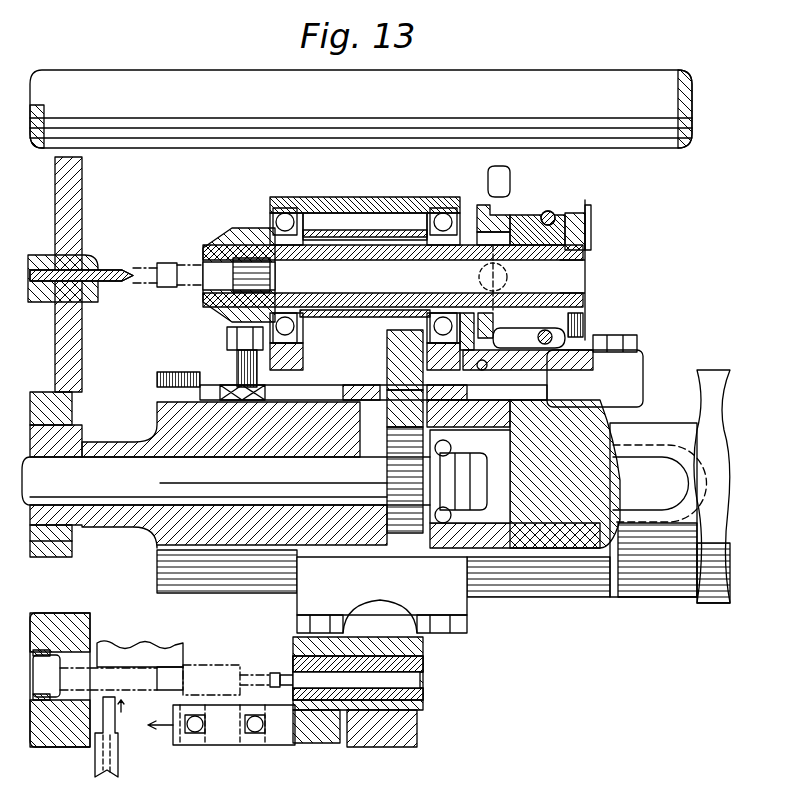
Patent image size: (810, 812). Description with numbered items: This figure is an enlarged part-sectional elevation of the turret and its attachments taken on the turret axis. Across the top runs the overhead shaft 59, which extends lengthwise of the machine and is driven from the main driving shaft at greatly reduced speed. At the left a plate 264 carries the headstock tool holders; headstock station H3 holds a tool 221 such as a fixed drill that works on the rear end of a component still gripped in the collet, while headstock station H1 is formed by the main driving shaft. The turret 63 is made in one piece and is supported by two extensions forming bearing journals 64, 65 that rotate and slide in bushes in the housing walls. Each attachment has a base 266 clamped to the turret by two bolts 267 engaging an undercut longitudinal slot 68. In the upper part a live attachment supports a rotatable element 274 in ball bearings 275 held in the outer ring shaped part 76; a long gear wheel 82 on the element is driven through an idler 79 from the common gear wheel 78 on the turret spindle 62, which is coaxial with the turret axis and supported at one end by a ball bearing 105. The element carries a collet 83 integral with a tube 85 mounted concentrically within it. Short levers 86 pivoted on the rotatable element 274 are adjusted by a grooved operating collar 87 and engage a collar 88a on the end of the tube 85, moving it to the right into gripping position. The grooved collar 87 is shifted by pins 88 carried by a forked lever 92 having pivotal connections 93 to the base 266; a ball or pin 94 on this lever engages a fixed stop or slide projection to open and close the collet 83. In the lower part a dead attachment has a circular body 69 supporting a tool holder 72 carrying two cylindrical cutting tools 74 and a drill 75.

The overhead shaft 59 is at (100, 78).
The plate 264 is at (80, 191).
The headstock station H3 is at (98, 252).
The collet 83 is at (226, 246).
The tool 221 is at (110, 284).
The rotatable element 274 is at (398, 247).
The outer ring shaped part 76 is at (347, 206).
The long gear wheel 82 is at (377, 226).
The ball bearings 275 is at (286, 209).
The ball or pin 94 is at (509, 180).
The forked lever 92 is at (508, 212).
The grooved operating collar 87 is at (549, 214).
The short levers 86 is at (572, 215).
The collar 88a is at (591, 224).
The tube 85 is at (585, 262).
The pins 88 is at (505, 277).
The pivotal connections 93 is at (580, 346).
The base 266 is at (585, 390).
The undercut longitudinal slot 68 is at (158, 393).
The bolts 267 is at (240, 358).
The idler 79 is at (390, 346).
The gear wheel 78 is at (392, 452).
The bearing journal extension 64 is at (102, 528).
The turret spindle 62 is at (117, 478).
The ball bearing 105 is at (498, 592).
The turret 63 is at (633, 580).
The bearing journal extension 65 is at (712, 607).
The headstock station H1 is at (90, 626).
The drill 75 is at (290, 676).
The cylindrical cutting tools 74 is at (230, 730).
The tool holder 72 is at (322, 741).
The circular body 69 is at (418, 733).